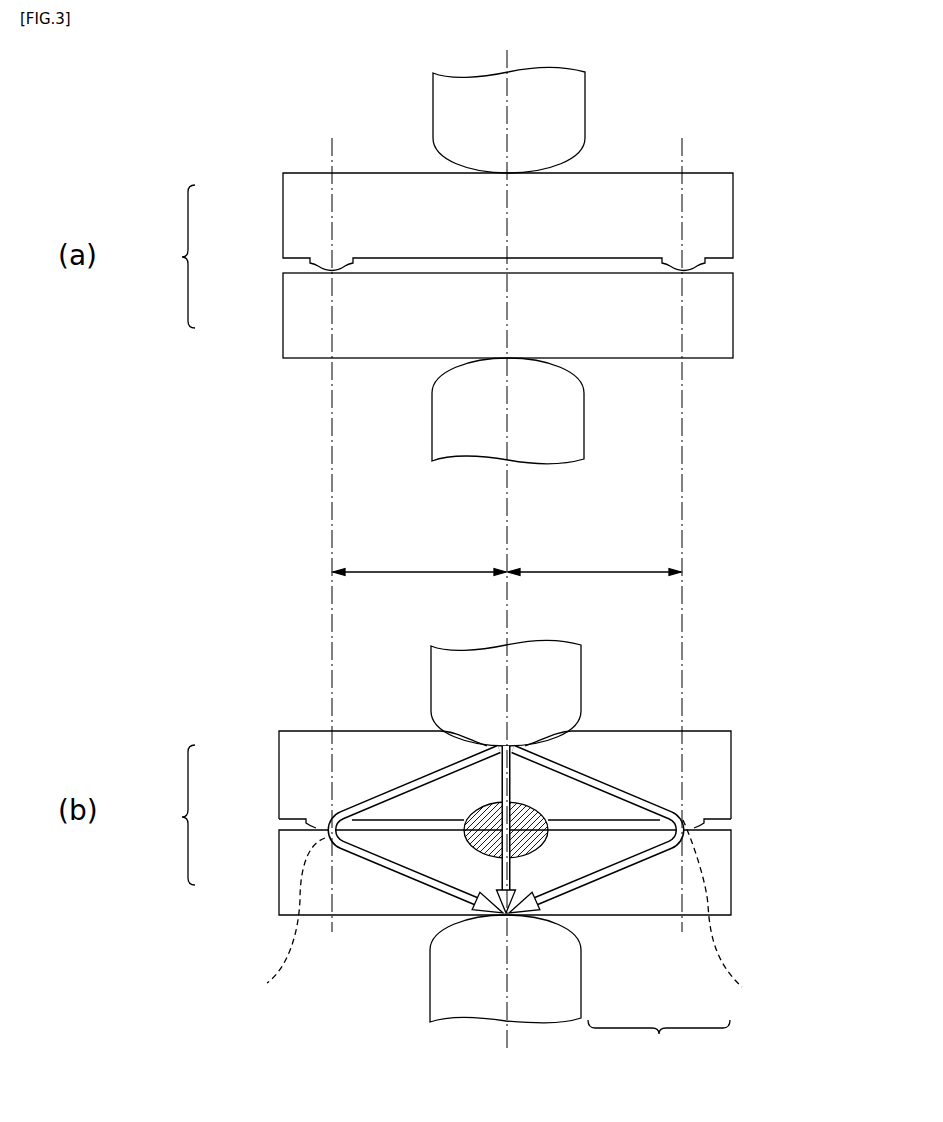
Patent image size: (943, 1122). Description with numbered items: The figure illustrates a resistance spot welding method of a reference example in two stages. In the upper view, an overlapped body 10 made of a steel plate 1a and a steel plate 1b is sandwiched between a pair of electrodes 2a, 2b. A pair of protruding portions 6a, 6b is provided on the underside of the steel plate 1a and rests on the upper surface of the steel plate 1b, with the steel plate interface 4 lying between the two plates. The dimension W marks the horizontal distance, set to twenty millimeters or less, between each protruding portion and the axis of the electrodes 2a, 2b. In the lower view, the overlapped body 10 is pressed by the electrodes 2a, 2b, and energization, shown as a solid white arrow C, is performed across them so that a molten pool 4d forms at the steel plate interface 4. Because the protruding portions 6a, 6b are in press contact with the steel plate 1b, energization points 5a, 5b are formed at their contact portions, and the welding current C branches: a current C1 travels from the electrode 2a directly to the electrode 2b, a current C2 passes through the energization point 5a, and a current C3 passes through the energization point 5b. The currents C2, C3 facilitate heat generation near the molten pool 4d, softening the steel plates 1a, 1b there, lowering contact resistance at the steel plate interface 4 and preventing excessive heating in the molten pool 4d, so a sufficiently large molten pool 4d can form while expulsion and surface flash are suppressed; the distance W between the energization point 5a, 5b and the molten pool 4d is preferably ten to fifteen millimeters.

The overlapped body 10 is at (172, 535).
The steel plate 1a is at (288, 230).
The steel plate 1b is at (290, 320).
The electrode 2a is at (457, 118).
The electrode 2b is at (452, 416).
The steel plate interface 4 is at (740, 264).
The molten pool 4d is at (535, 820).
The protruding portion 6a is at (323, 262).
The protruding portion 6b is at (690, 268).
The energization point 5a is at (275, 922).
The energization point 5b is at (734, 912).
The welding current C is at (659, 1046).
The current C1 is at (513, 878).
The current C2 is at (442, 886).
The current C3 is at (637, 858).
The horizontal distance W is at (507, 553).